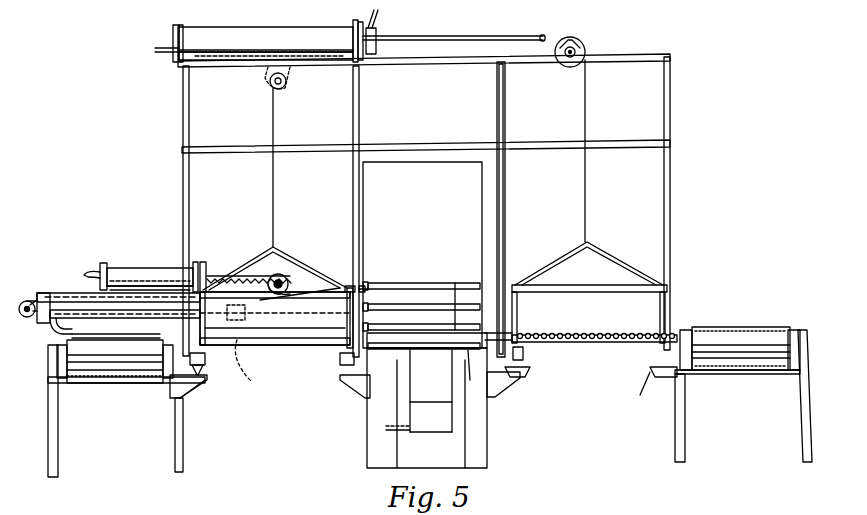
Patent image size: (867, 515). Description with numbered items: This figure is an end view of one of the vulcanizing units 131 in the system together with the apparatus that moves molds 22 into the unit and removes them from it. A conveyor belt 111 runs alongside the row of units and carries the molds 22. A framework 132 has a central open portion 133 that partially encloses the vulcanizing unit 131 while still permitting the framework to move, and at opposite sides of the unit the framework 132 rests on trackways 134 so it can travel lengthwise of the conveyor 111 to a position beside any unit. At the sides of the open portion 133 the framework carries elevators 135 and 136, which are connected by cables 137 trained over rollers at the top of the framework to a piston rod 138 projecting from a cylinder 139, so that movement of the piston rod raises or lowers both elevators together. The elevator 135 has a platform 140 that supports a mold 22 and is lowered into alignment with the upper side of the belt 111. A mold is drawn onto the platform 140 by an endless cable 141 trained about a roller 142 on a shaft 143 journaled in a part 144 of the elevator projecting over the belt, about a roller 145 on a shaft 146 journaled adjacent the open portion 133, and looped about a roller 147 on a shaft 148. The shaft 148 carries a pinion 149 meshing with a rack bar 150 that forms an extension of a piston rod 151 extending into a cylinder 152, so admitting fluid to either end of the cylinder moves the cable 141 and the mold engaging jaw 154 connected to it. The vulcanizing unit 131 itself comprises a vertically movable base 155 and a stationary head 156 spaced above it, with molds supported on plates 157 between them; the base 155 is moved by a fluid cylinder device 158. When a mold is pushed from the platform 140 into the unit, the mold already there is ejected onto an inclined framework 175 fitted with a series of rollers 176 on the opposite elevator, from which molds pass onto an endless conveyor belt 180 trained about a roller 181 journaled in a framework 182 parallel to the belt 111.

The mold 22 is at (400, 283).
The conveyor belt 111 is at (60, 340).
The vulcanizing unit 131 is at (415, 160).
The framework 132 is at (506, 125).
The central open portion 133 is at (495, 198).
The trackway 134 is at (205, 370).
The elevator 135 is at (286, 253).
The elevator 136 is at (596, 250).
The cable 137 is at (272, 140).
The piston rod 138 is at (480, 37).
The cylinder 139 is at (299, 28).
The platform 140 is at (245, 345).
The endless cable 141 is at (55, 293).
The roller 142 is at (24, 300).
The shaft 143 is at (33, 302).
The part of the elevator 144 is at (70, 293).
The roller 145 is at (349, 286).
The shaft 146 is at (360, 289).
The roller 147 is at (287, 277).
The shaft 148 is at (292, 283).
The pinion 149 is at (289, 284).
The rack bar 150 is at (246, 276).
The piston rod 151 is at (142, 282).
The cylinder 152 is at (130, 268).
The mold engaging jaw 154 is at (52, 325).
The vertically movable base 155 is at (469, 370).
The stationary head 156 is at (478, 241).
The plate 157 is at (455, 283).
The fluid cylinder device 158 is at (376, 352).
The inclined framework 175 is at (540, 334).
The roller 176 is at (575, 336).
The endless conveyor belt 180 is at (745, 327).
The roller 181 is at (802, 329).
The framework 182 is at (803, 400).